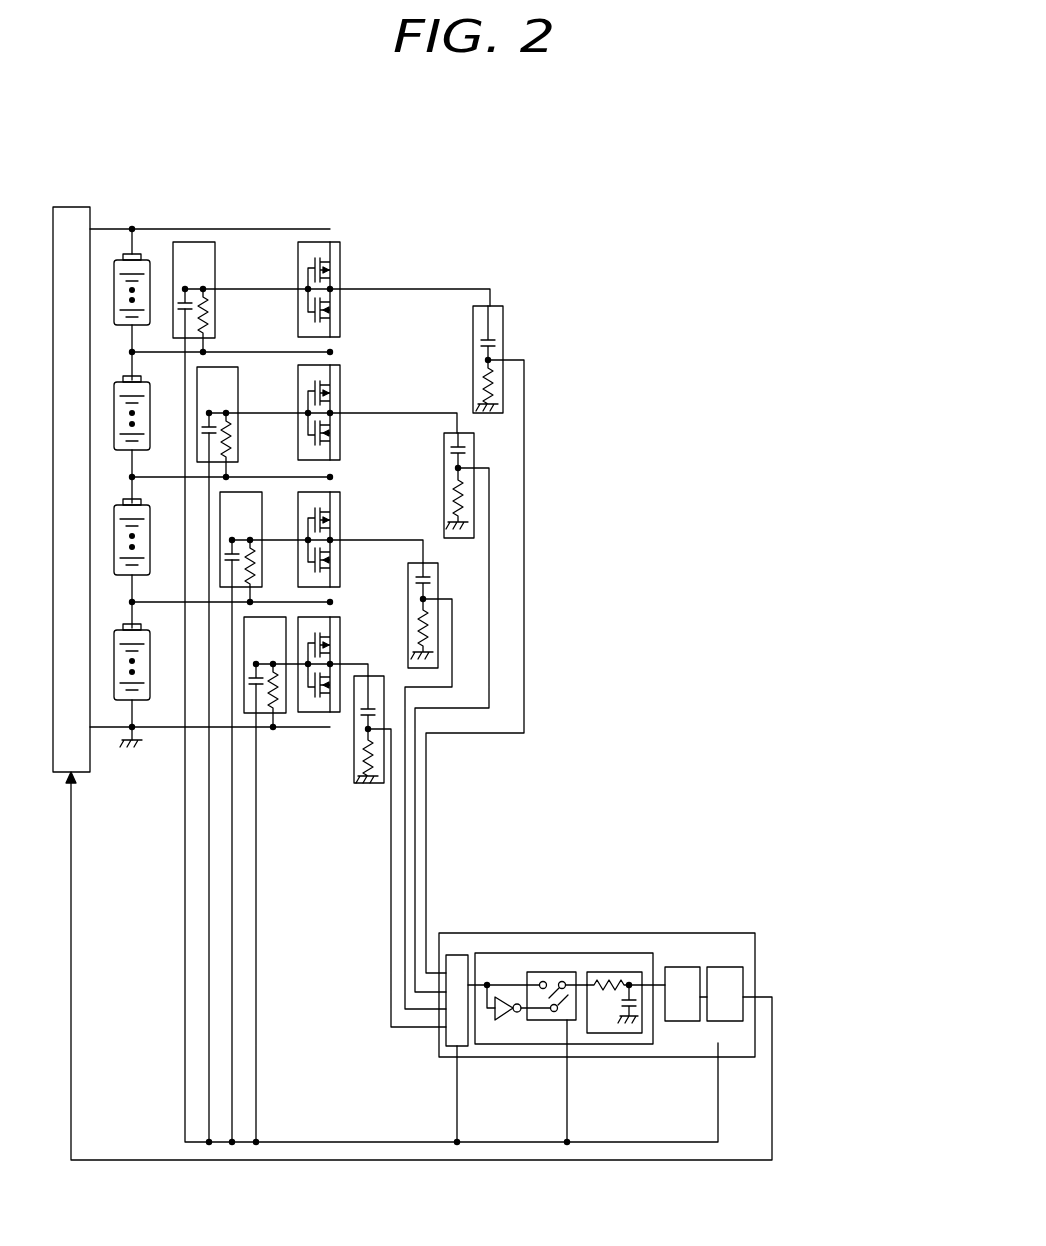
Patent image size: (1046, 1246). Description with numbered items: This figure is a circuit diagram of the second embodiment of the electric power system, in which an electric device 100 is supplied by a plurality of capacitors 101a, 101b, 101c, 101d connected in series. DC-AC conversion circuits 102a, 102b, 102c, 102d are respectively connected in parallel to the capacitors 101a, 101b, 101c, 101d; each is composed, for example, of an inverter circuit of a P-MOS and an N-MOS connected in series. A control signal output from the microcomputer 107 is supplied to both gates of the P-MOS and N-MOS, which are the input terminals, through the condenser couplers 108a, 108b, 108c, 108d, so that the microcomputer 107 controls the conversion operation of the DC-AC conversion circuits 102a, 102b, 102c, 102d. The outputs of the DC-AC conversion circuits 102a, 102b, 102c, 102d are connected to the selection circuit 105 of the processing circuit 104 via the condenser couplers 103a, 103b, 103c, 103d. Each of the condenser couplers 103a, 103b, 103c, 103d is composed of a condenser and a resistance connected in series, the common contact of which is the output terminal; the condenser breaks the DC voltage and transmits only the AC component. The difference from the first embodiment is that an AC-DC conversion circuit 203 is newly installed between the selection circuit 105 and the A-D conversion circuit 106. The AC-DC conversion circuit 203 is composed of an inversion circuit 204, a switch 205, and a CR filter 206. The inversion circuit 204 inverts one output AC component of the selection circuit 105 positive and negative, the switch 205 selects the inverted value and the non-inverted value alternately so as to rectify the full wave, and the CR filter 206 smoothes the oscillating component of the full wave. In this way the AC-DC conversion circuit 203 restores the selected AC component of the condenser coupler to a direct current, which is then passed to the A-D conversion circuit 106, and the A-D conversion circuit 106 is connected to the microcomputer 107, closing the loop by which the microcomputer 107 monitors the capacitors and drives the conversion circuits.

The electric device 100 is at (68, 207).
The capacitor 101a is at (137, 256).
The capacitor 101b is at (152, 405).
The capacitor 101c is at (152, 530).
The capacitor 101d is at (152, 655).
The condenser coupler 108a is at (196, 242).
The condenser coupler 108b is at (238, 400).
The condenser coupler 108c is at (255, 492).
The condenser coupler 108d is at (283, 714).
The DC-AC conversion circuit 102a is at (340, 251).
The DC-AC conversion circuit 102b is at (340, 398).
The DC-AC conversion circuit 102c is at (340, 533).
The DC-AC conversion circuit 102d is at (340, 658).
The condenser coupler 103a is at (503, 325).
The condenser coupler 103b is at (444, 476).
The condenser coupler 103c is at (408, 597).
The condenser coupler 103d is at (367, 783).
The processing circuit 104 is at (450, 933).
The selection circuit 105 is at (460, 955).
The AC-DC conversion circuit 203 is at (543, 955).
The inversion circuit 204 is at (503, 1022).
The switch 205 is at (540, 1022).
The CR filter 206 is at (605, 1033).
The A-D conversion circuit 106 is at (683, 967).
The microcomputer 107 is at (732, 967).